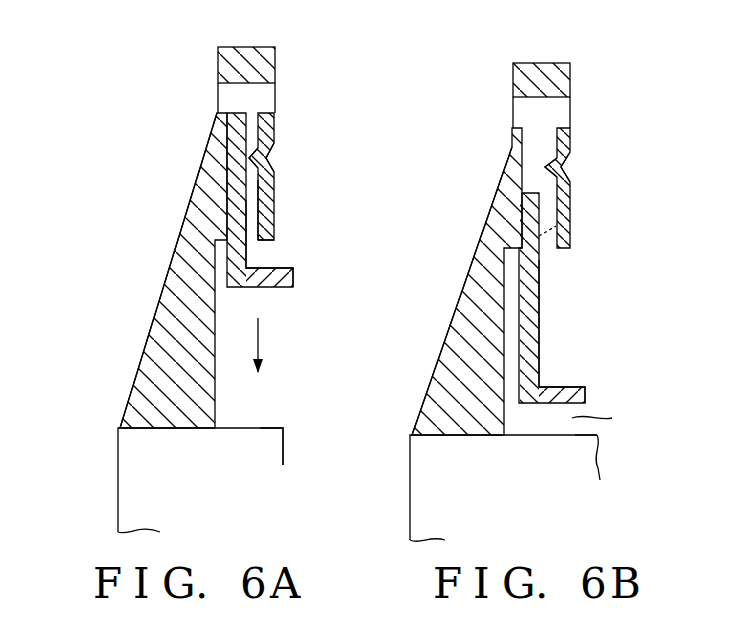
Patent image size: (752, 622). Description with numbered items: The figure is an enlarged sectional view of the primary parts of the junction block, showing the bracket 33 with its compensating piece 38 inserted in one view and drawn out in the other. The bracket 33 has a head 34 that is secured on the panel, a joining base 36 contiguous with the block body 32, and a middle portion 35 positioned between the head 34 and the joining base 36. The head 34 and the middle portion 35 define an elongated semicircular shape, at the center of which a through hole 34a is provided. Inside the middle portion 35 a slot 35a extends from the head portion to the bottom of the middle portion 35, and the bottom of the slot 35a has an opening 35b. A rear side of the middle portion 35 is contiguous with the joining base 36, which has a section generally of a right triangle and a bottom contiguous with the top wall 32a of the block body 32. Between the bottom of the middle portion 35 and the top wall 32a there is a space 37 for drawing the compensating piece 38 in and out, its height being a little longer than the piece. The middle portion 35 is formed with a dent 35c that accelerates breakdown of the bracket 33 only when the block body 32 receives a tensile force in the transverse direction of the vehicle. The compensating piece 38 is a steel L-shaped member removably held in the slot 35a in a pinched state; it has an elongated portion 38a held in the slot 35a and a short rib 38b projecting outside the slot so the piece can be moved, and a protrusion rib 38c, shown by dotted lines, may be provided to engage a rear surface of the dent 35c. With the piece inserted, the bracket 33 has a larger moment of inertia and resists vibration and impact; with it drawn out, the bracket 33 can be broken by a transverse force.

In FIG. 6A, the block body 32 is at (115, 505).
In FIG. 6B, the block body 32 is at (408, 513).
In FIG. 6A, the top wall 32a is at (262, 430).
In FIG. 6B, the top wall 32a is at (583, 436).
In FIG. 6A, the bracket 33 is at (183, 222).
In FIG. 6B, the bracket 33 is at (463, 259).
In FIG. 6A, the head 34 is at (218, 62).
In FIG. 6B, the head 34 is at (516, 70).
In FIG. 6A, the through hole 34a is at (258, 95).
In FIG. 6B, the through hole 34a is at (563, 107).
In FIG. 6A, the middle portion 35 is at (216, 128).
In FIG. 6B, the middle portion 35 is at (570, 138).
In FIG. 6A, the slot 35a is at (253, 200).
In FIG. 6A, the opening 35b is at (252, 242).
In FIG. 6A, the dent 35c is at (262, 162).
In FIG. 6B, the dent 35c is at (572, 172).
In FIG. 6A, the joining base 36 is at (152, 324).
In FIG. 6B, the joining base 36 is at (452, 378).
In FIG. 6A, the space 37 is at (228, 390).
In FIG. 6B, the space 37 is at (572, 418).
In FIG. 6A, the compensating piece 38 is at (261, 292).
In FIG. 6B, the compensating piece 38 is at (543, 335).
In FIG. 6A, the elongated portion 38a is at (240, 190).
In FIG. 6B, the elongated portion 38a is at (528, 290).
In FIG. 6B, the short rib 38b is at (586, 395).
In FIG. 6B, the protrusion rib 38c is at (556, 226).